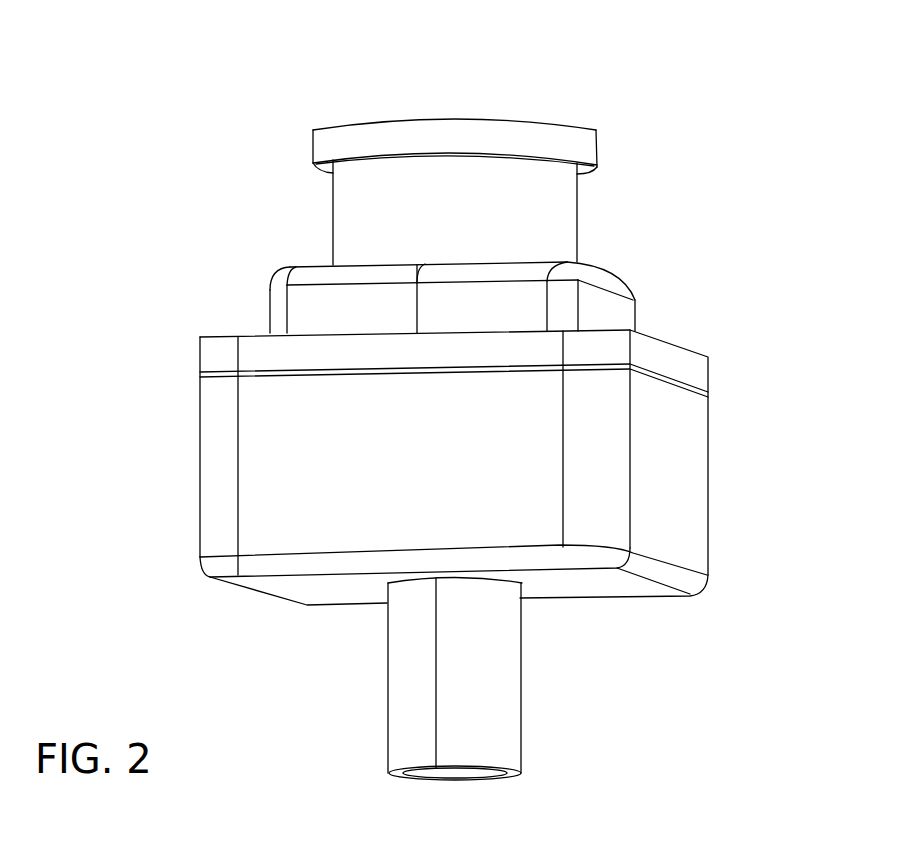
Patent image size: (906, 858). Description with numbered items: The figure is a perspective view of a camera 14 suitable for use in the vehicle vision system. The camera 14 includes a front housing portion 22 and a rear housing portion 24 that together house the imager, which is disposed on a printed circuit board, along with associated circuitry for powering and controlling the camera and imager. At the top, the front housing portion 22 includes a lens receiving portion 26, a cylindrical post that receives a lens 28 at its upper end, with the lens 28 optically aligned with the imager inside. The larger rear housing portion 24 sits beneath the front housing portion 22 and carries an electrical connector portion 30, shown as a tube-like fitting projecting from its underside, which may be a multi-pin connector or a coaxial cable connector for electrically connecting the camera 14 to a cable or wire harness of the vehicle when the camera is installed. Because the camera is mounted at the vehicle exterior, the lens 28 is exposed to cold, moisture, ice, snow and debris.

The camera 14 is at (713, 130).
The front housing portion 22 is at (638, 318).
The rear housing portion 24 is at (212, 490).
The lens receiving portion 26 is at (347, 238).
The lens 28 is at (502, 102).
The electrical connector portion 30 is at (400, 705).